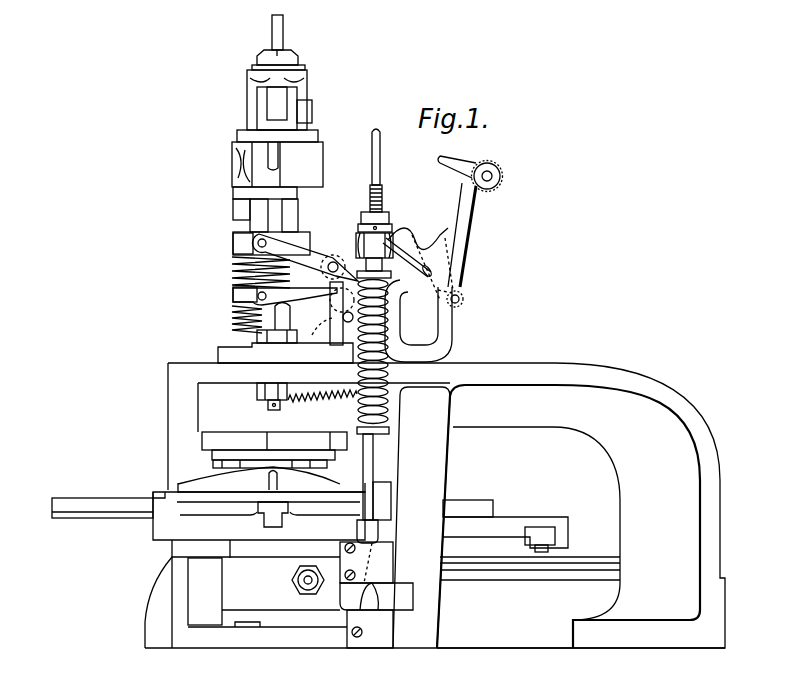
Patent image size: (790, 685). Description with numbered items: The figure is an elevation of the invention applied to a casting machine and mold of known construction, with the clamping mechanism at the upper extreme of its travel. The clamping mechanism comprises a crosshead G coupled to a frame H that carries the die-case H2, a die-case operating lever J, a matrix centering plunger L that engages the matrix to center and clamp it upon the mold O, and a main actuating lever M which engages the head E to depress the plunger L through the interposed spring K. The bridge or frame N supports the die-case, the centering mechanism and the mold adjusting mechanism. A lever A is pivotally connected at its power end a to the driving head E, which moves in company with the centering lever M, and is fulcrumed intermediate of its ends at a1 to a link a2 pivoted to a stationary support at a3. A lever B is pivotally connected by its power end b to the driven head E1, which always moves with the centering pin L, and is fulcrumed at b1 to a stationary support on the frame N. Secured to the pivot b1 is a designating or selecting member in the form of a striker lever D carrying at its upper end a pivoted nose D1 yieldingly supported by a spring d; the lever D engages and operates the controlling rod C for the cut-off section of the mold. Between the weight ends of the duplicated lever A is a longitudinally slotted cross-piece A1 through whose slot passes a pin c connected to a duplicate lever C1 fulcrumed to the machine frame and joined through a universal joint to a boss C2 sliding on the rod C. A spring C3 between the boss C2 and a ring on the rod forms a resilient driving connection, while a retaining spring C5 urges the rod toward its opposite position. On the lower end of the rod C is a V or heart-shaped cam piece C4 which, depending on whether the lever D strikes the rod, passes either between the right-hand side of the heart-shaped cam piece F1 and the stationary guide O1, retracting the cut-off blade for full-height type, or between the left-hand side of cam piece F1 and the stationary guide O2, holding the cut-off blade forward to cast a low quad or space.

The die-case operating lever J is at (307, 76).
The crosshead G is at (322, 150).
The main actuating lever M is at (290, 215).
The power end of lever A a is at (236, 233).
The driving member E is at (234, 241).
The lever A is at (322, 260).
The spring K is at (231, 273).
The driven member E1 is at (234, 293).
The power end of lever B b is at (233, 302).
The matrix centering plunger L is at (292, 313).
The pivot of lever B b1 is at (357, 335).
The pivot of link a2 a3 is at (328, 337).
The lever B is at (230, 337).
The controlling member C is at (381, 183).
The boss C2 is at (358, 203).
The cam piece C4 is at (383, 215).
The fulcrum of lever A a1 is at (386, 236).
The spring C3 is at (392, 375).
The duplicate lever C1 is at (426, 240).
The nose D1 is at (478, 166).
The spring d is at (499, 170).
The designating or selecting member D is at (465, 215).
The link a2 is at (413, 270).
The longitudinally slotted cross-piece A1 is at (455, 288).
The pin c is at (460, 301).
The bridge or frame N is at (435, 505).
The retaining spring C5 is at (310, 402).
The frame H is at (188, 482).
The die-case H2 is at (530, 531).
The mold O is at (250, 587).
The stationary guide O2 is at (340, 598).
The stationary guide O1 is at (384, 567).
The heart-shaped cam piece F1 is at (378, 597).